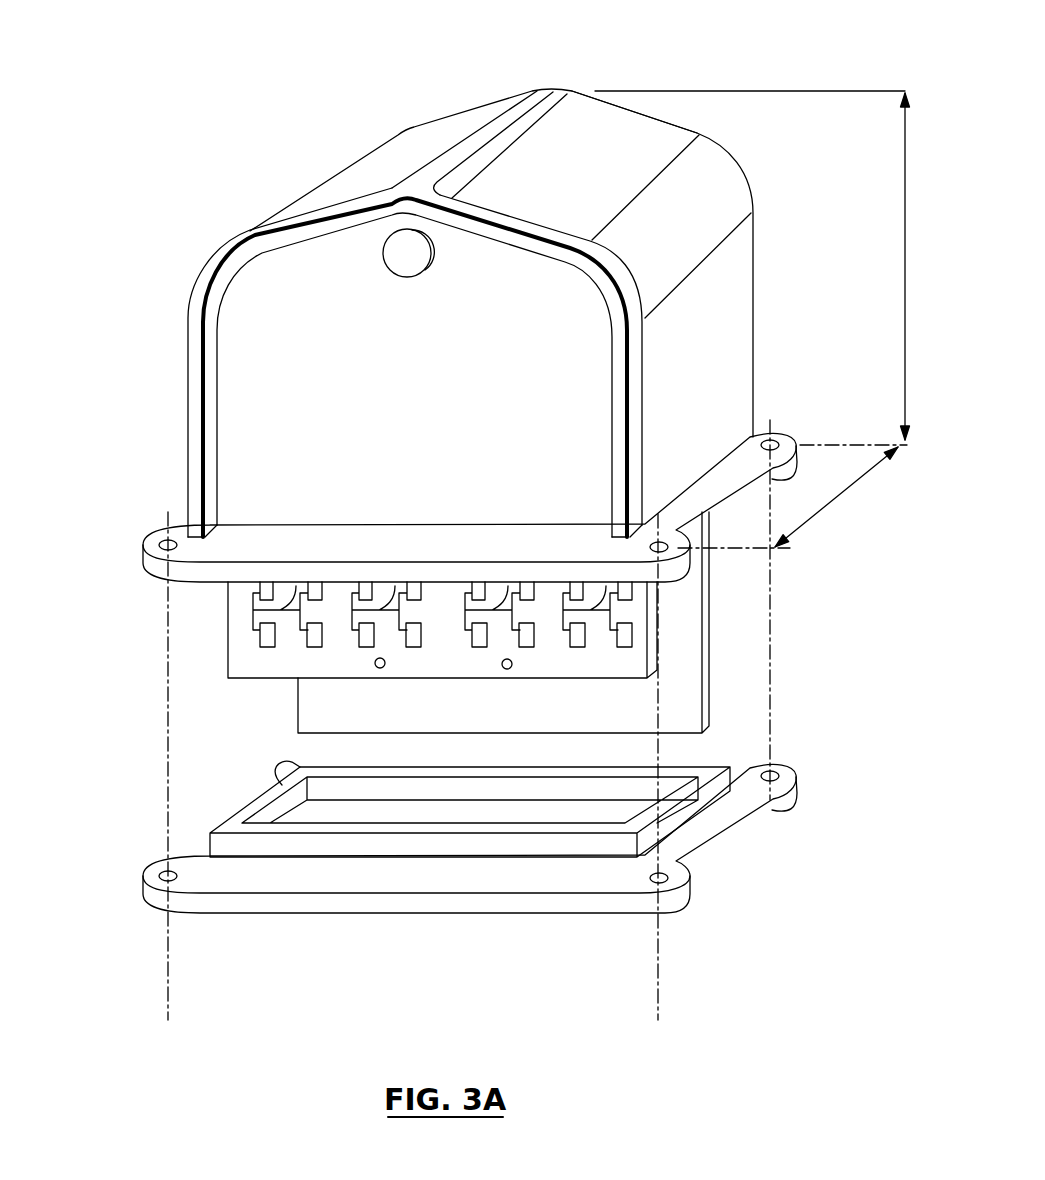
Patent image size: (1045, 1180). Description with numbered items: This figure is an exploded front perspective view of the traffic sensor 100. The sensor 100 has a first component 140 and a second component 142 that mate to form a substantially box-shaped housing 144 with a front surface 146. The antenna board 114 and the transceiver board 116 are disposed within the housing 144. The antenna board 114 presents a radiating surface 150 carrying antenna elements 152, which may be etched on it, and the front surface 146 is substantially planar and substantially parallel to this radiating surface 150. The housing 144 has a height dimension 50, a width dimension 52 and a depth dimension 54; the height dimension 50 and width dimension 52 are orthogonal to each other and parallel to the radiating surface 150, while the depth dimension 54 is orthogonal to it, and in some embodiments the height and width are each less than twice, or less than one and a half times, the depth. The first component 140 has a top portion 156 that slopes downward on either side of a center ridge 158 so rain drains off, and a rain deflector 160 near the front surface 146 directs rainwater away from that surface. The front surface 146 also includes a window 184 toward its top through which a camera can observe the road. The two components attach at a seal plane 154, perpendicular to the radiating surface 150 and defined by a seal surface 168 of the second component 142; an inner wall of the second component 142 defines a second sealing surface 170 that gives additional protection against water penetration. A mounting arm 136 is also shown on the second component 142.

The sensor 100 is at (462, 511).
The center ridge 158 is at (509, 106).
The window 184 is at (403, 232).
The rain deflector 160 is at (278, 229).
The front surface 146 is at (394, 340).
The top portion 156 is at (627, 171).
The housing 144 is at (738, 254).
The first component 140 is at (494, 277).
The height dimension 50 is at (902, 307).
The depth dimension 54 is at (832, 504).
The width dimension 52 is at (272, 637).
The antenna board 114 is at (463, 633).
The radiating surface 150 is at (242, 657).
The transceiver board 116 is at (298, 713).
The antenna elements 152 is at (627, 637).
The seal plane 154 is at (180, 857).
The seal surface 168 is at (263, 870).
The second sealing surface 170 is at (438, 843).
The mounting arm 136 is at (730, 828).
The second component 142 is at (439, 858).